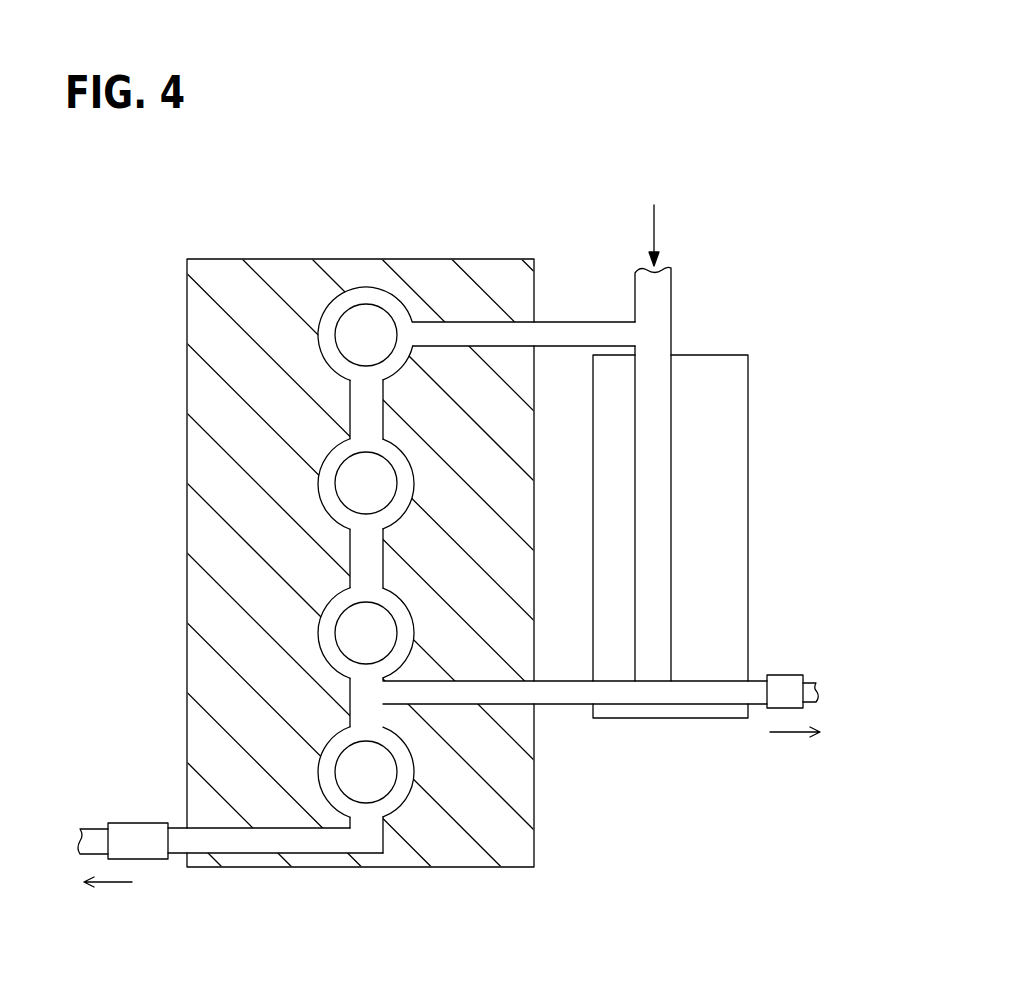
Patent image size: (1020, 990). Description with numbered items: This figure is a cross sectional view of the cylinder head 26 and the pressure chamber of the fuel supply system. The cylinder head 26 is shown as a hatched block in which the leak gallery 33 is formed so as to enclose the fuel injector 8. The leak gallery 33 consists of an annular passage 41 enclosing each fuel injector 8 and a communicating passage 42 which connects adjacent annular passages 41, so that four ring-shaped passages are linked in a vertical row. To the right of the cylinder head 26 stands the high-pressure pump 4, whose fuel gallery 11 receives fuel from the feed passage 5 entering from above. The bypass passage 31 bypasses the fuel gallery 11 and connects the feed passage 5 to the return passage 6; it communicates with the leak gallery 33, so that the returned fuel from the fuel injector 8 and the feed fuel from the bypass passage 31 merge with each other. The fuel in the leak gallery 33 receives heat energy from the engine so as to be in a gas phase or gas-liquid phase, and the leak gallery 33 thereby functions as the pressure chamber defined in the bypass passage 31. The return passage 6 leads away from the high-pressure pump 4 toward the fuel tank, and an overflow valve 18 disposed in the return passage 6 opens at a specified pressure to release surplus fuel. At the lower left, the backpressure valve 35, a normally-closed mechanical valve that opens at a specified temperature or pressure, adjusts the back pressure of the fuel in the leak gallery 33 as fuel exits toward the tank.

The high-pressure pump 4 is at (733, 481).
The feed passage 5 is at (657, 298).
The return passage 6 is at (723, 690).
The fuel injector 8 is at (342, 475).
The fuel gallery 11 is at (650, 416).
The overflow valve 18 is at (785, 685).
The cylinder head 26 is at (513, 813).
The bypass passage 31 is at (497, 333).
The leak gallery 33 is at (329, 317).
The backpressure valve 35 is at (147, 830).
The annular passage 41 is at (327, 490).
The communicating passage 42 is at (367, 555).